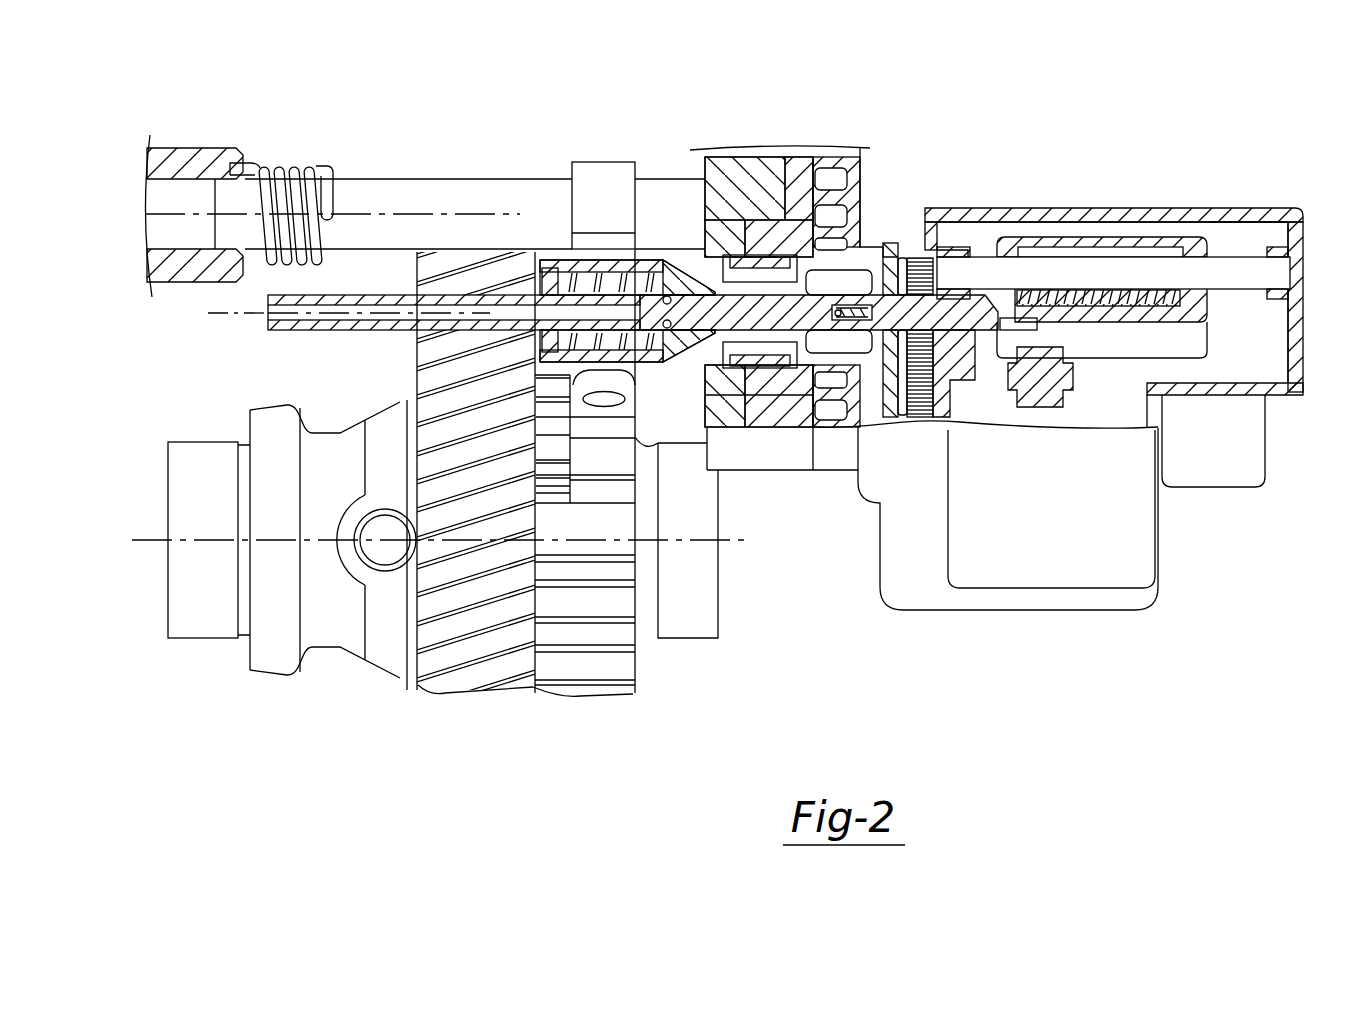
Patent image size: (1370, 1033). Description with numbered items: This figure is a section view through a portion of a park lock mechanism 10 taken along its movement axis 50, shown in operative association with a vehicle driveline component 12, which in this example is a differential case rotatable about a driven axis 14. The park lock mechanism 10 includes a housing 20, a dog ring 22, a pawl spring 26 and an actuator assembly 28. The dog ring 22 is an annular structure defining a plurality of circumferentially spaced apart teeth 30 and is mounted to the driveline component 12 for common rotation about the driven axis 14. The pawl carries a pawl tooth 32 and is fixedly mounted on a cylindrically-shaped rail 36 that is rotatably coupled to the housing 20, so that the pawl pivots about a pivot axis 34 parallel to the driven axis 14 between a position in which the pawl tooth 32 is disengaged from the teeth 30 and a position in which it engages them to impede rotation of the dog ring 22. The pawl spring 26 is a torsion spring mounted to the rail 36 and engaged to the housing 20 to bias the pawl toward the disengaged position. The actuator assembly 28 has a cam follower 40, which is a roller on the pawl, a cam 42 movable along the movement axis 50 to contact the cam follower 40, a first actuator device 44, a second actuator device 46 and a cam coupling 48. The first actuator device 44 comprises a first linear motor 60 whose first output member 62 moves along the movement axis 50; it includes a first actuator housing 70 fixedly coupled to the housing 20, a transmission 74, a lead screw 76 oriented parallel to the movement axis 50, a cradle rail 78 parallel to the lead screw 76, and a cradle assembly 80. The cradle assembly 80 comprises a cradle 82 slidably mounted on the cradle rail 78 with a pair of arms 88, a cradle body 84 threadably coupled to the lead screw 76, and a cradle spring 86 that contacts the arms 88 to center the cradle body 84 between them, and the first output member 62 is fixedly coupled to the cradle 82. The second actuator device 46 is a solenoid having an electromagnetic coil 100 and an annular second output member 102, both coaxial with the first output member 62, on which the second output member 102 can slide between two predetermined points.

The park lock mechanism 10 is at (1108, 178).
The vehicle driveline component 12 is at (182, 402).
The driven axis 14 is at (147, 540).
The housing 20 is at (718, 160).
The dog ring 22 is at (622, 672).
The pawl spring 26 is at (288, 170).
The actuator assembly 28 is at (823, 497).
The teeth 30 is at (628, 602).
The pawl tooth 32 is at (625, 495).
The pivot axis 34 is at (372, 215).
The rail 36 is at (405, 190).
The cam follower 40 is at (545, 365).
The cam 42 is at (553, 270).
The first actuator device 44 is at (1235, 235).
The second actuator device 46 is at (780, 197).
The cam coupling 48 is at (675, 370).
The movement axis 50 is at (228, 313).
The first linear motor 60 is at (1262, 322).
The first output member 62 is at (342, 330).
The first actuator housing 70 is at (1280, 397).
The transmission 74 is at (925, 420).
The lead screw 76 is at (1043, 265).
The cradle rail 78 is at (1275, 272).
The cradle assembly 80 is at (1195, 342).
The cradle 82 is at (1100, 335).
The cradle body 84 is at (1117, 290).
The cradle spring 86 is at (1090, 380).
The arms 88 is at (1000, 243).
The electromagnetic coil 100 is at (778, 378).
The second output member 102 is at (855, 285).